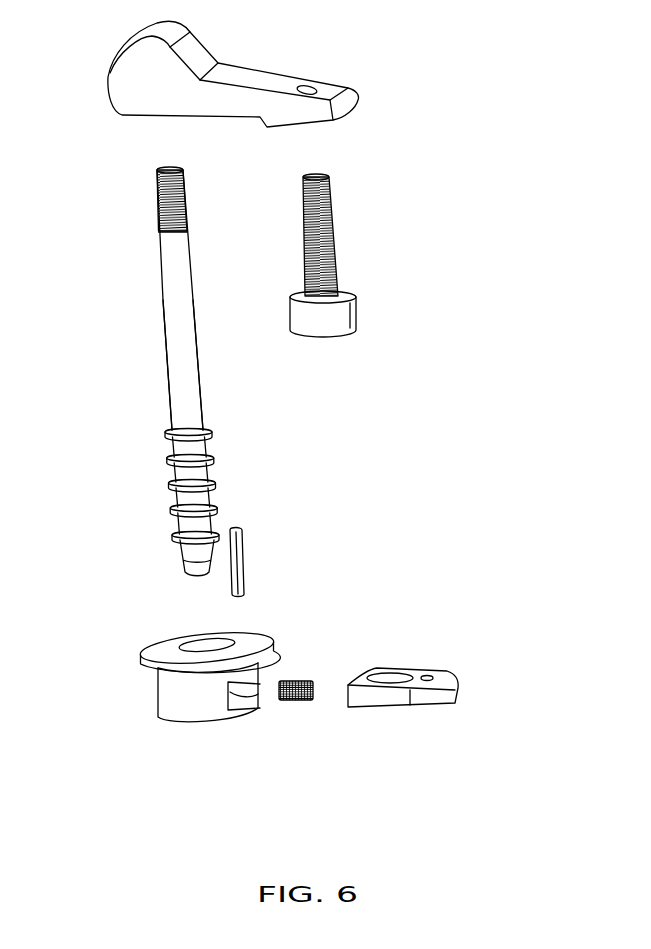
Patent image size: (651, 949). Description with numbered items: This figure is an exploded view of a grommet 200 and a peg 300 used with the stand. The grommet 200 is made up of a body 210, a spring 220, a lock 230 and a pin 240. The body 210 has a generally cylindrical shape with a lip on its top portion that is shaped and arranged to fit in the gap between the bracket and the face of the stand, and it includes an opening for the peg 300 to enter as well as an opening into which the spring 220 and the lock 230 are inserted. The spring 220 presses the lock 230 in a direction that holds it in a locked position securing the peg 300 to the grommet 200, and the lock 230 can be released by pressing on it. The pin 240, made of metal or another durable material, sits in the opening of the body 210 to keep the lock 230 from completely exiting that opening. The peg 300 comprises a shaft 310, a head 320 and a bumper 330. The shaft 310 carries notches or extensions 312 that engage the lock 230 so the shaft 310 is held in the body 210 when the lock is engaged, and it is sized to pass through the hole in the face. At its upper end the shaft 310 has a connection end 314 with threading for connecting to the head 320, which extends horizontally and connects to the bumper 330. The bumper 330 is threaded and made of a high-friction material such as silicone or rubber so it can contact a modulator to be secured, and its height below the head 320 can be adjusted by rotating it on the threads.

The grommet 200 is at (242, 703).
The body 210 is at (208, 700).
The spring 220 is at (305, 700).
The lock 230 is at (420, 700).
The pin 240 is at (243, 562).
The peg 300 is at (130, 372).
The shaft 310 is at (168, 380).
The notches or extensions 312 is at (178, 517).
The connection end 314 is at (155, 208).
The head 320 is at (313, 115).
The bumper 330 is at (328, 232).